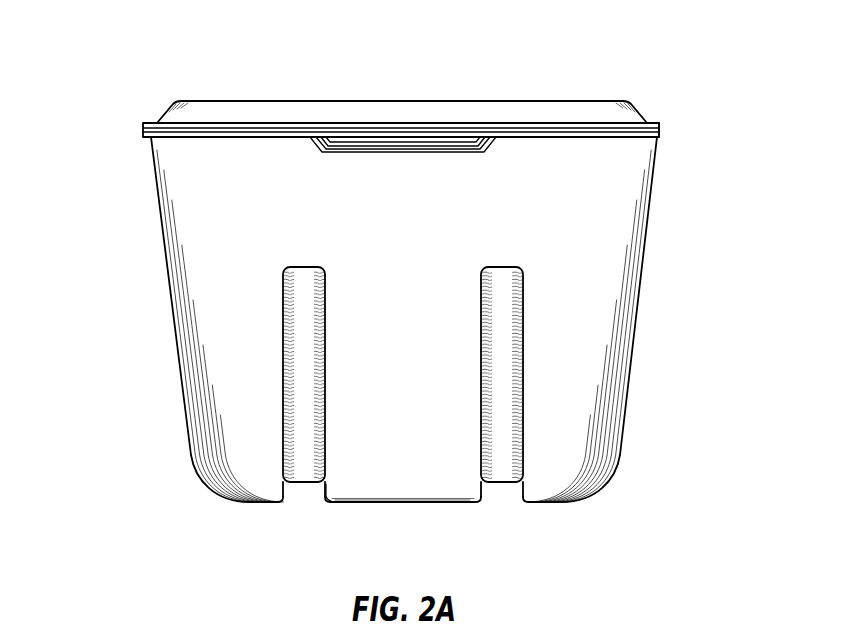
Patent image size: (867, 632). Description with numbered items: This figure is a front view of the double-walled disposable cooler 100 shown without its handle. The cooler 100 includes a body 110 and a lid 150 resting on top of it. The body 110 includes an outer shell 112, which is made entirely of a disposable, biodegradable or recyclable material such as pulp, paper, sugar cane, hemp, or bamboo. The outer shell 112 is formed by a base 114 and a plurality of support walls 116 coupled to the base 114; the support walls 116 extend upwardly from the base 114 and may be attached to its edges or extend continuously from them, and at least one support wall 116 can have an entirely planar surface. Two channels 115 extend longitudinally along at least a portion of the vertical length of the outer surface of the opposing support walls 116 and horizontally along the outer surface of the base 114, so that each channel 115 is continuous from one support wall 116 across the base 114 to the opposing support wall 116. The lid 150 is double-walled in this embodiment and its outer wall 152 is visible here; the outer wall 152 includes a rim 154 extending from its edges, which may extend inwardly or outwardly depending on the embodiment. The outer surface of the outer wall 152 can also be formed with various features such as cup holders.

The double-walled cooler 100 is at (411, 282).
The body 110 is at (455, 350).
The outer shell 112 is at (583, 373).
The base 114 is at (413, 503).
The channels 115 is at (495, 402).
The support walls 116 is at (358, 487).
The lid 150 is at (430, 99).
The outer wall 152 is at (512, 102).
The rim 154 is at (650, 122).